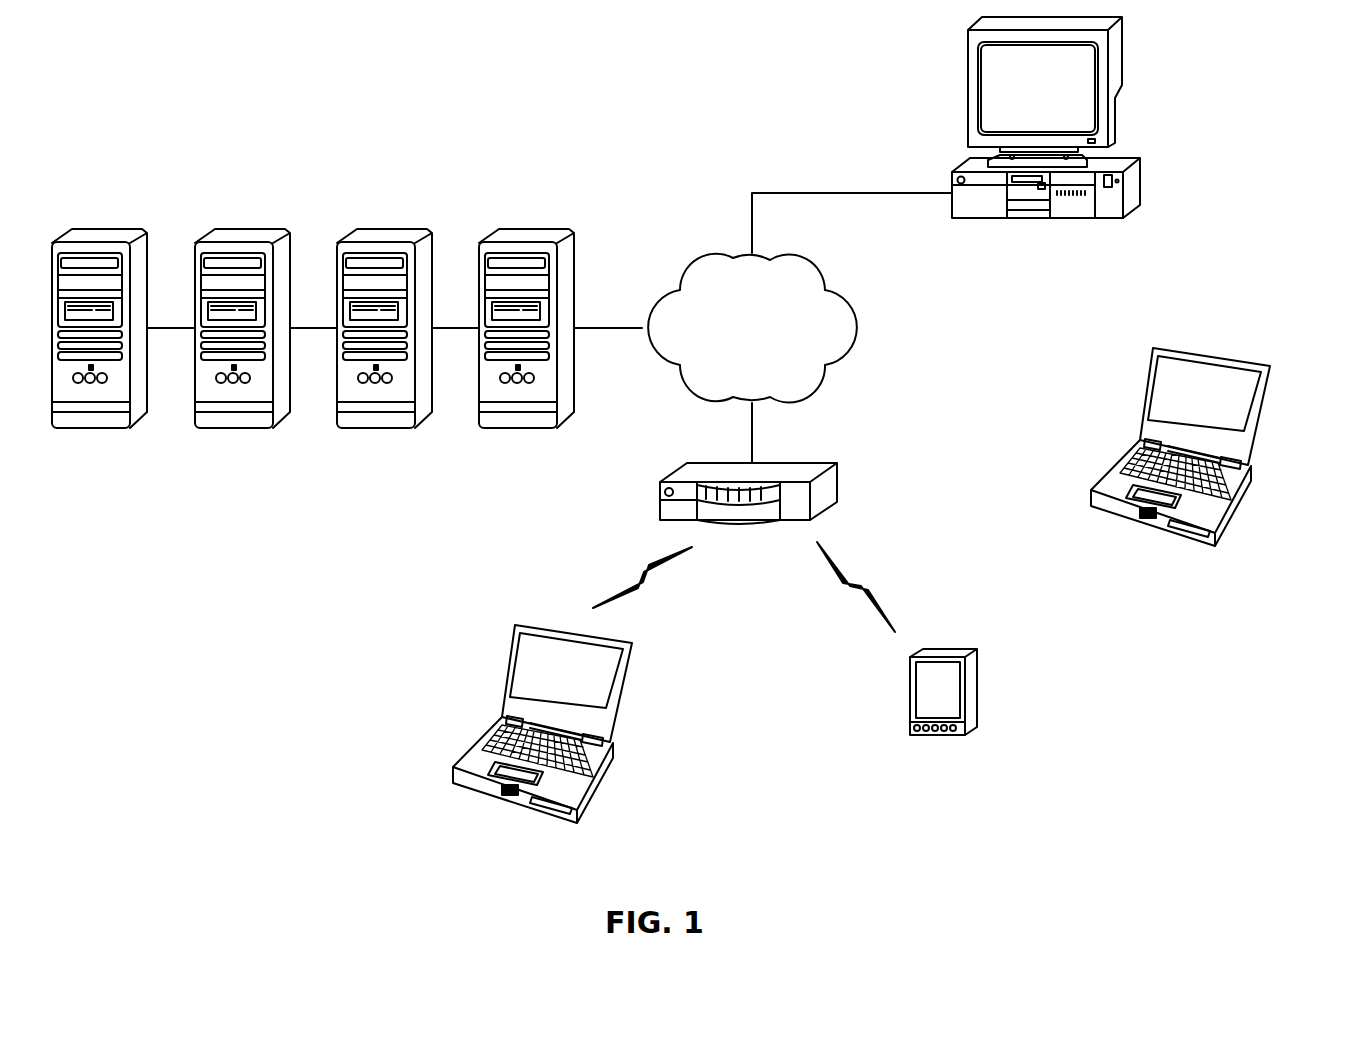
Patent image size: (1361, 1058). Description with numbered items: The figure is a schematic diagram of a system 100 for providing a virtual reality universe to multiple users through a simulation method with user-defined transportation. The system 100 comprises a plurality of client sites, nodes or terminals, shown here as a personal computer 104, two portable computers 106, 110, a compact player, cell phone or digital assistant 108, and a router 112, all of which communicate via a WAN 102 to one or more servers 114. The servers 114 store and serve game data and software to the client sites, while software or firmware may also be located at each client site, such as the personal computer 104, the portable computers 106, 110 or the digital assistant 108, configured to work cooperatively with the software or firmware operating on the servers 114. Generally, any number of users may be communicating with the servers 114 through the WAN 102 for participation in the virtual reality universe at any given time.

The system 100 is at (177, 112).
The WAN 102 is at (808, 262).
The personal computer 104 is at (1140, 183).
The portable computer 106 is at (1267, 420).
The digital assistant 108 is at (977, 687).
The portable computer 110 is at (607, 777).
The router 112 is at (827, 495).
The servers 114 is at (52, 448).